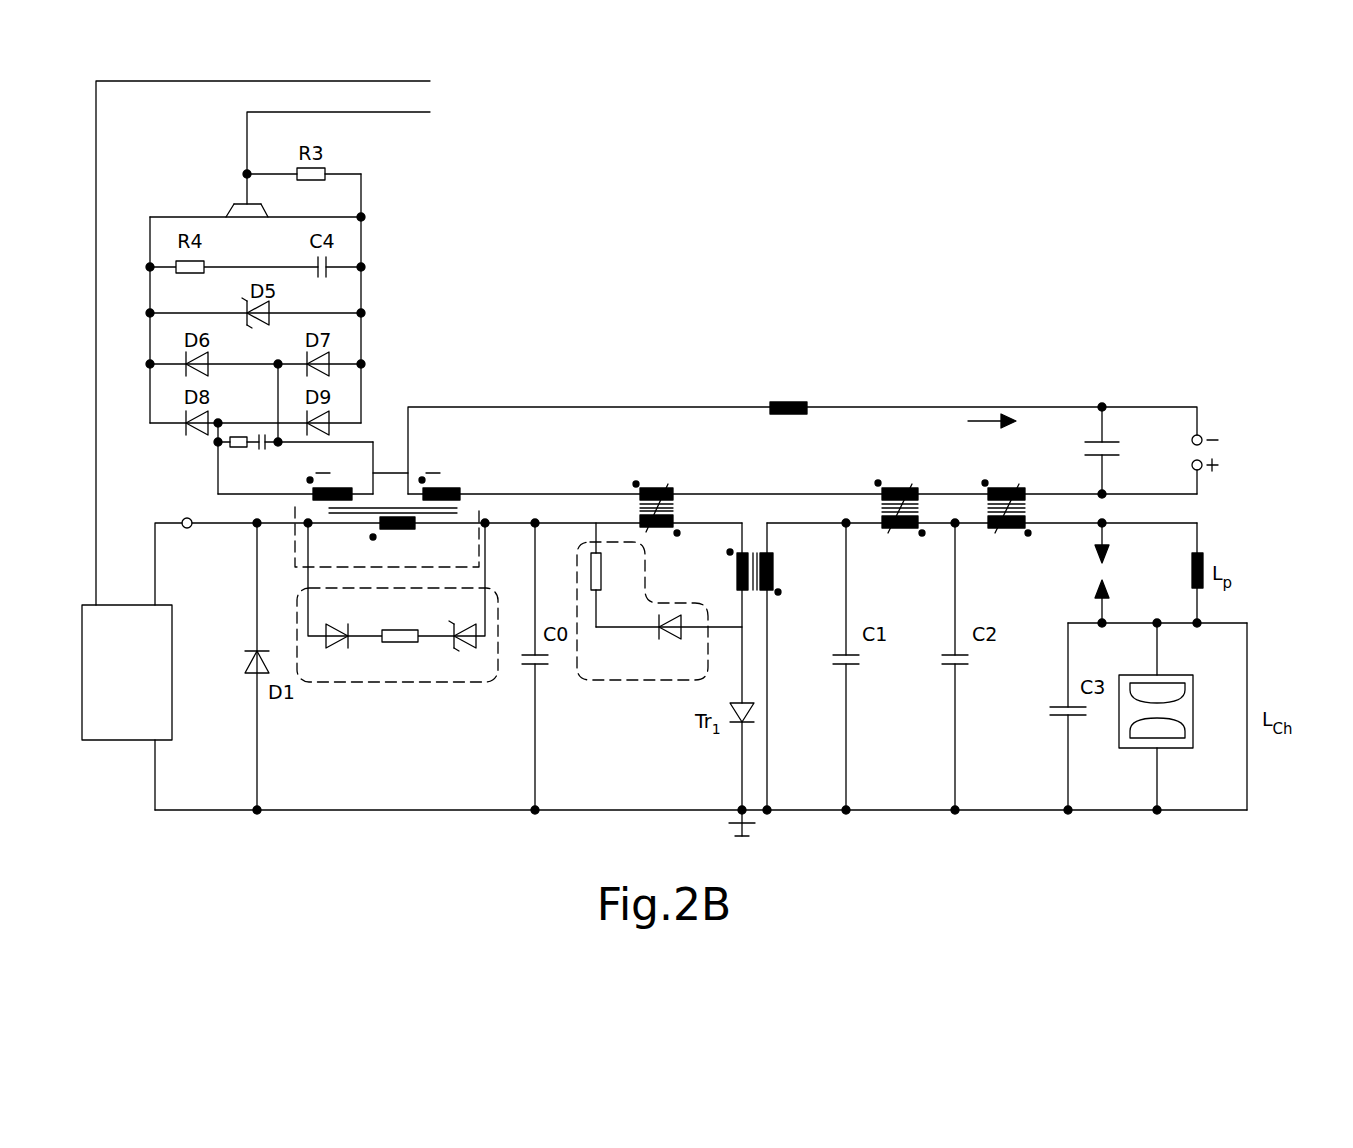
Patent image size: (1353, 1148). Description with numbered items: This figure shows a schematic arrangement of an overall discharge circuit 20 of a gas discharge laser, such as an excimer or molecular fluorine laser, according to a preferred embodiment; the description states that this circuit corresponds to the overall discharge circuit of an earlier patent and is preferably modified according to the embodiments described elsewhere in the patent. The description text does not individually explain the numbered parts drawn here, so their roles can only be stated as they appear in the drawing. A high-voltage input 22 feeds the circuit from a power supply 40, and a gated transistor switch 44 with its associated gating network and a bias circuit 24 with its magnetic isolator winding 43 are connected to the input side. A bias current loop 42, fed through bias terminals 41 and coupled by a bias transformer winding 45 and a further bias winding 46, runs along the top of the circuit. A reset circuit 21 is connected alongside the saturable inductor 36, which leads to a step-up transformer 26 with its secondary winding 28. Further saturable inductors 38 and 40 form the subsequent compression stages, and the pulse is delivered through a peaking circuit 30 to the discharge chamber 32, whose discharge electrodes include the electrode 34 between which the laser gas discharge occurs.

The pulse power circuit 20 is at (898, 262).
The reset circuit 21 is at (605, 683).
The HV input 22 is at (190, 528).
The bias circuit 24 is at (370, 683).
The step-up transformer 26 is at (678, 530).
The transformer secondary winding 28 is at (784, 544).
The peaking capacitor circuit 30 is at (1140, 552).
The discharge chamber 32 is at (1212, 664).
The electrode 34 is at (1170, 750).
The saturable inductor MA 36 is at (656, 466).
The saturable inductor L1 38 is at (900, 466).
The power supply 40 is at (1007, 466).
The bias terminals 41 is at (1226, 417).
The bias current loop 42 is at (478, 494).
The magnetic isolator winding 43 is at (415, 528).
The IGBT switch 44 is at (257, 182).
The bias transformer winding 45 is at (347, 485).
The bias winding 46 is at (448, 488).